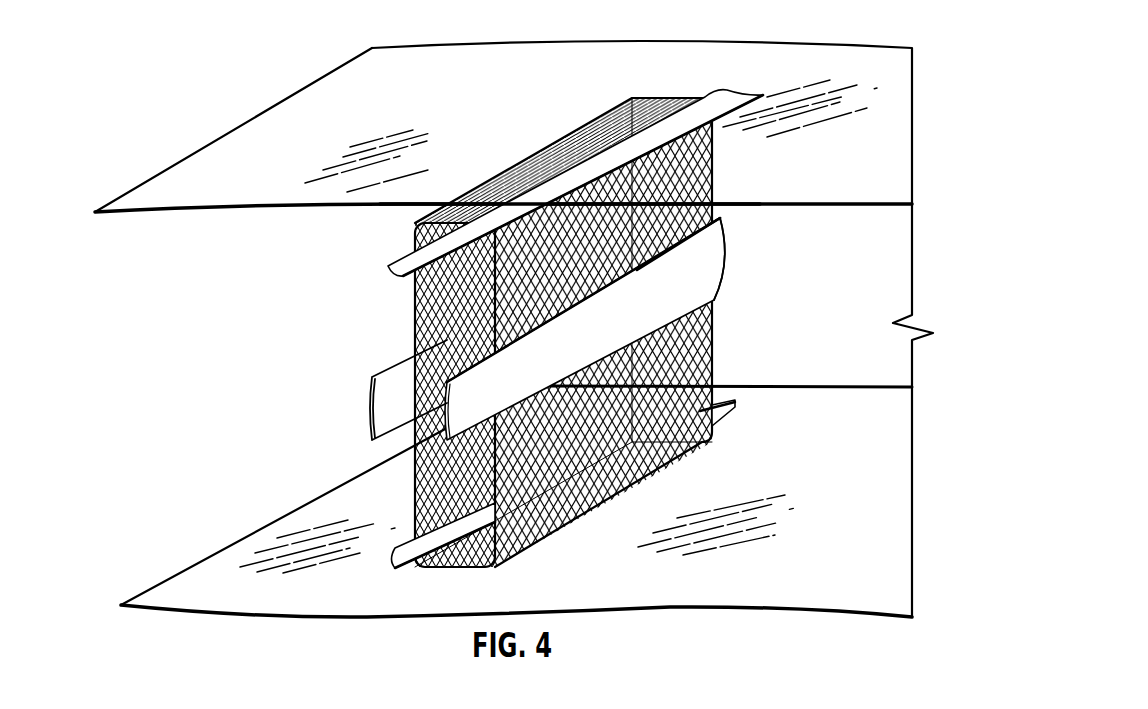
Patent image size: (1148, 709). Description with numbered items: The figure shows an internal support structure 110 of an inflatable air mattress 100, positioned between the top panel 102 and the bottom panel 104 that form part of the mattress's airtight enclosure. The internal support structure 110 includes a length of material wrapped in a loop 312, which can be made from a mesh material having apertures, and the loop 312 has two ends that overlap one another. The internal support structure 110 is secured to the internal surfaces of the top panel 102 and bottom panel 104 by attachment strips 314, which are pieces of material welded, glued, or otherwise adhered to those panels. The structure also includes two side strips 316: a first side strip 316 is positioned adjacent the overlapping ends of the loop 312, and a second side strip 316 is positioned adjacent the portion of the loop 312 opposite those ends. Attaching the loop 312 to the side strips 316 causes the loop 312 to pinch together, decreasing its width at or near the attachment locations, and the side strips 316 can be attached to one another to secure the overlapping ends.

The inflatable air mattress 100 is at (140, 55).
The top panel 102 is at (233, 152).
The bottom panel 104 is at (293, 523).
The internal support structure 110 is at (413, 475).
The loop 312 is at (715, 300).
The attachment strip 314 is at (383, 271).
The side strip 316 is at (722, 224).